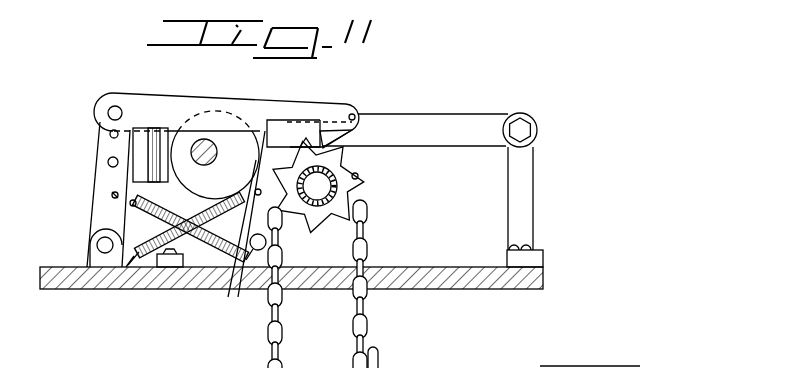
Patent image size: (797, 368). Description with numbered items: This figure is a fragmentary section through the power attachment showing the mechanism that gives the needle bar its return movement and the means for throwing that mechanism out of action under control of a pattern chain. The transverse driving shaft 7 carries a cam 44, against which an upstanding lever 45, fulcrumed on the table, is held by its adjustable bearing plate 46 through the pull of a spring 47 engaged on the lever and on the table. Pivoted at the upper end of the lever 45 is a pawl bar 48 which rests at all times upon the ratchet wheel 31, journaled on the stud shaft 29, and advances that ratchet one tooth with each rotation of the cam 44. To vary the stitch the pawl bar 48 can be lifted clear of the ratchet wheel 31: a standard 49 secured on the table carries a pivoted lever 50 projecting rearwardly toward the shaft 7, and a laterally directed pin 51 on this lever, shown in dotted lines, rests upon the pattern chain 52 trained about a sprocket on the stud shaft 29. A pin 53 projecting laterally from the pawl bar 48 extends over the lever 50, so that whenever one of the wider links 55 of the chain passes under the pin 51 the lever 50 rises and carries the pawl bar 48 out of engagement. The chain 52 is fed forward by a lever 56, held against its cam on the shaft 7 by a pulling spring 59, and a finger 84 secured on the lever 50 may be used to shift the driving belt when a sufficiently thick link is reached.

The shaft 7 is at (205, 150).
The stud shaft 29 is at (320, 187).
The ratchet wheel 31 is at (358, 177).
The cam 44 is at (243, 147).
The lever 45 is at (105, 187).
The adjustable bearing plate 46 is at (113, 197).
The spring 47 is at (209, 279).
The pawl bar 48 is at (163, 110).
The standard 49 is at (526, 188).
The lever 50 is at (444, 132).
The pin 51 is at (356, 115).
The pattern chain 52 is at (368, 330).
The pin 53 is at (312, 110).
The wider links 55 is at (373, 252).
The lever 56 is at (238, 285).
The pulling spring 59 is at (151, 268).
The finger 84 is at (291, 118).